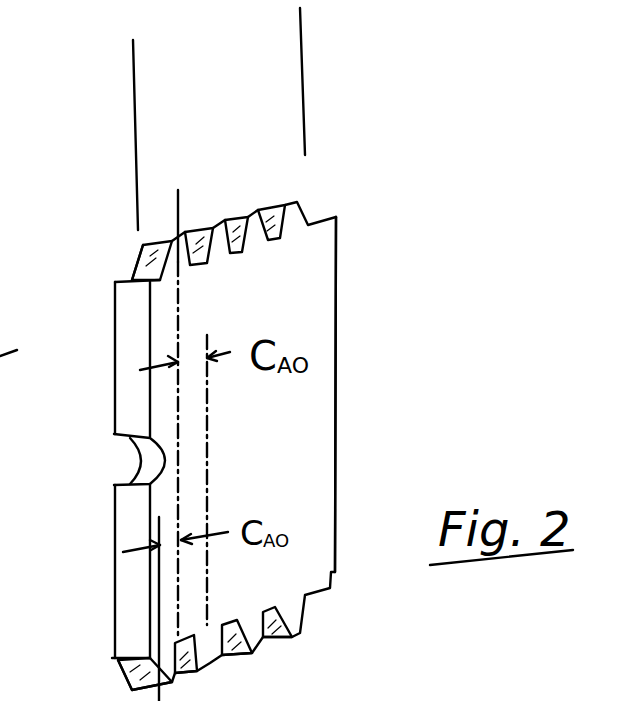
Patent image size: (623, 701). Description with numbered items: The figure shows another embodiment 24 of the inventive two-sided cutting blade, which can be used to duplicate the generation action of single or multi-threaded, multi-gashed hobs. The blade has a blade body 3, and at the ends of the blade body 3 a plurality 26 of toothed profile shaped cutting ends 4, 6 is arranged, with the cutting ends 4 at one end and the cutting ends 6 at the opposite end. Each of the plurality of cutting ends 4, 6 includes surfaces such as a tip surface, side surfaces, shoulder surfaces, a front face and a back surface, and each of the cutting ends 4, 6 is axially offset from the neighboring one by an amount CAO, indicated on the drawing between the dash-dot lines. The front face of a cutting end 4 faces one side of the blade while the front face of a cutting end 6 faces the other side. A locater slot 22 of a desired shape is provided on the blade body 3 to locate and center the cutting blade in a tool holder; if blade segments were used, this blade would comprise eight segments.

The blade body 3 is at (337, 405).
The cutting end 4 is at (320, 187).
The cutting end 6 is at (270, 667).
The locater slot 22 is at (125, 457).
The cutting blade embodiment 24 is at (348, 325).
The plurality of cutting ends 26 is at (302, 30).